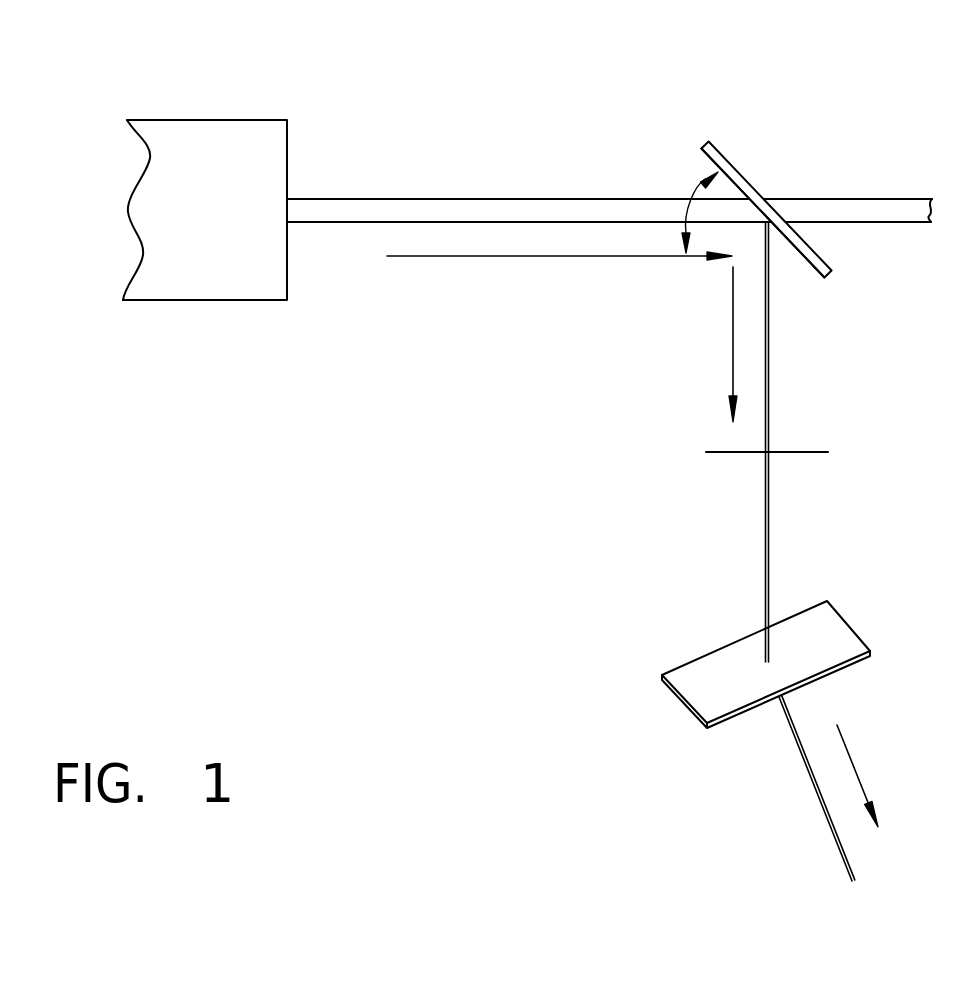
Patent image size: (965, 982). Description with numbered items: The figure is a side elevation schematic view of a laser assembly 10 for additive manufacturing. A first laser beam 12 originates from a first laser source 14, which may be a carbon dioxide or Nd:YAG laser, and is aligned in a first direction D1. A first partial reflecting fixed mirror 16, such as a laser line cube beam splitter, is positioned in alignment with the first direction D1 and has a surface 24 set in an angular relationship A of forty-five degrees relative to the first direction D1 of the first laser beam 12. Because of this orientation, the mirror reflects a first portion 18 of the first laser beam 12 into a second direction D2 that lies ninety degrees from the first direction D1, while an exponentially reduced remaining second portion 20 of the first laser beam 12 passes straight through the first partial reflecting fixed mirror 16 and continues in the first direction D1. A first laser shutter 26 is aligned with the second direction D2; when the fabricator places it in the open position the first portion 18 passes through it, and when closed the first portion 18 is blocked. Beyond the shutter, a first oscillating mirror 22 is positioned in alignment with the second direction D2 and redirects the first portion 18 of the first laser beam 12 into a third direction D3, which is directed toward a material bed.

The laser assembly 10 is at (642, 96).
The first laser beam 12 is at (378, 210).
The first laser source 14 is at (207, 148).
The first partial reflecting fixed mirror 16 is at (719, 170).
The first portion of first laser beam 18 is at (768, 354).
The second portion of first laser beam 20 is at (870, 208).
The first oscillating mirror 22 is at (823, 635).
The surface 24 is at (810, 262).
The first laser shutter 26 is at (797, 451).
The angular relationship A is at (690, 196).
The first direction D1 is at (537, 257).
The second direction D2 is at (733, 323).
The third direction D3 is at (853, 762).